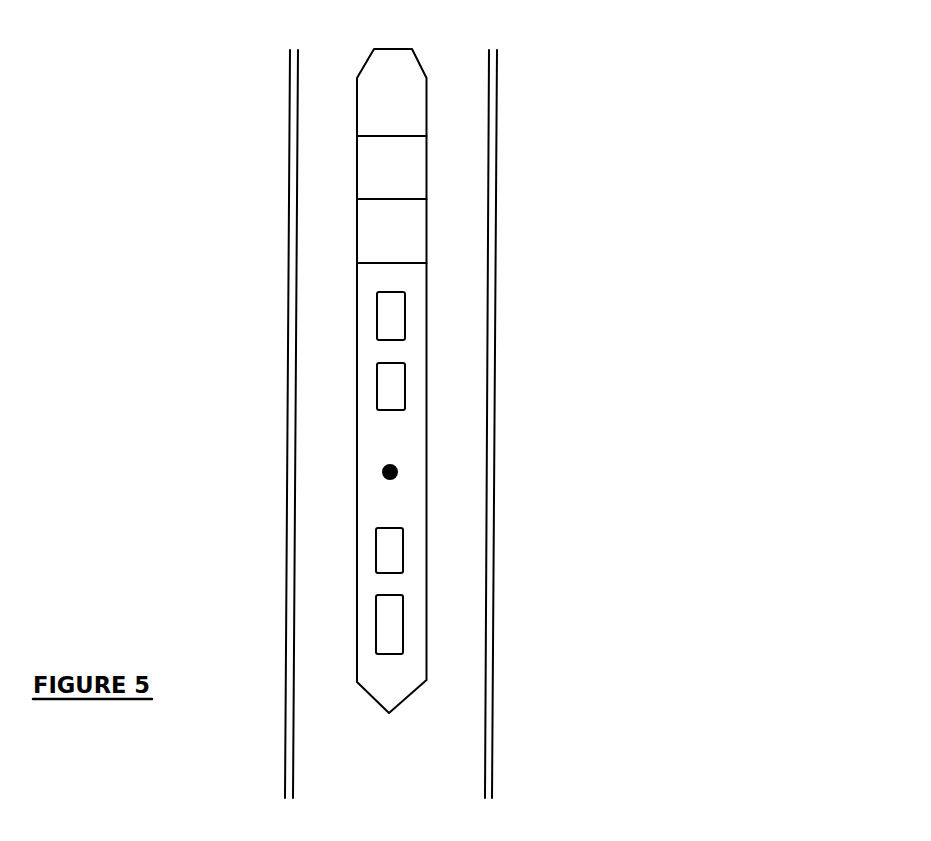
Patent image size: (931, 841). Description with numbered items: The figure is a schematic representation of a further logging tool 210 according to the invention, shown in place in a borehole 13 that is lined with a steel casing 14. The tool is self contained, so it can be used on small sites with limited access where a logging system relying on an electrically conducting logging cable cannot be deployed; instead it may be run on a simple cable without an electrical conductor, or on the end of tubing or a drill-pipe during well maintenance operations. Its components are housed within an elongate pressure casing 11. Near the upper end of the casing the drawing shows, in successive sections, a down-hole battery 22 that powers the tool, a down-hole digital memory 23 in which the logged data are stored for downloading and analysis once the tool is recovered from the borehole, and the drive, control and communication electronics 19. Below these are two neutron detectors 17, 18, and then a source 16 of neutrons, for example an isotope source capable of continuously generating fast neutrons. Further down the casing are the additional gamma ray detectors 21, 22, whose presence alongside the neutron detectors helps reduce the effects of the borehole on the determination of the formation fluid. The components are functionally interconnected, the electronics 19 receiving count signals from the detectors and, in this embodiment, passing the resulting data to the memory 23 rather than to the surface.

The pressure casing 11 is at (357, 241).
The borehole 13 is at (463, 355).
The steel casing 14 is at (497, 467).
The source of neutrons 16 is at (390, 471).
The neutron detector 17 is at (388, 388).
The neutron detector 18 is at (388, 315).
The drive, control and communication electronics 19 is at (411, 237).
The gamma ray detector 21 is at (392, 553).
The down-hole battery 22 is at (397, 105).
The down-hole digital memory 23 is at (411, 174).
The logging tool 210 is at (440, 452).